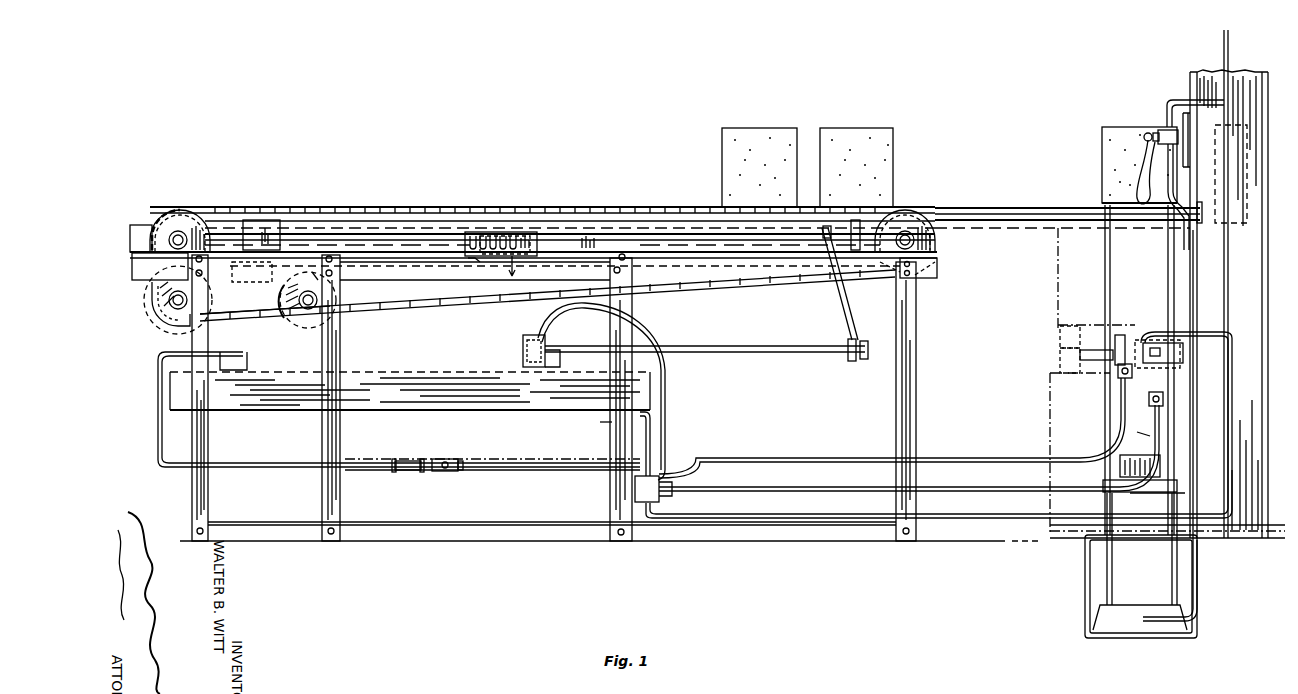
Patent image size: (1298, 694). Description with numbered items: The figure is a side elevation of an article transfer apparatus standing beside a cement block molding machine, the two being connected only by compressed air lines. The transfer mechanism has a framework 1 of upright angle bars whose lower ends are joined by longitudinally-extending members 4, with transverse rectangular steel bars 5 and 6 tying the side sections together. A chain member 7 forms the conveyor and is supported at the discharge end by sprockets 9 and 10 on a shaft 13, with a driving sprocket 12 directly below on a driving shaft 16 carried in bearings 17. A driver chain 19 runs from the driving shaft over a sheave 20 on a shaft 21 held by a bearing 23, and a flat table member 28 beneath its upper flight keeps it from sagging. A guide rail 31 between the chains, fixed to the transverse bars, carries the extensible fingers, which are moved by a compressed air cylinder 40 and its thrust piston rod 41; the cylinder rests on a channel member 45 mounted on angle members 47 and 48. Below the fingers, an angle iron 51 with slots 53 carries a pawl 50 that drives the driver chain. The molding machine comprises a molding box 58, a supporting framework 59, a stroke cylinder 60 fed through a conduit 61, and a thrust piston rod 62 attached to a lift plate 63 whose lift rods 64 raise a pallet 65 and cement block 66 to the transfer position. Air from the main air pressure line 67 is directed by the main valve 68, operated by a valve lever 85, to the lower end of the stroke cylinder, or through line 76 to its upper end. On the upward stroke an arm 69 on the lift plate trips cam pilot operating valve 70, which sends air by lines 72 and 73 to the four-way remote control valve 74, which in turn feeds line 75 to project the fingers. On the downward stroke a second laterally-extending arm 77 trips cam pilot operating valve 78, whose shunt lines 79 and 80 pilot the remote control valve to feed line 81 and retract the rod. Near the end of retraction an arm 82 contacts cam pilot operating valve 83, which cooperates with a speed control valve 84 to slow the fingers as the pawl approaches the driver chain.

The framework 1 is at (186, 490).
The longitudinally-extending members 4 is at (470, 545).
The rectangular steel bar 5 is at (866, 207).
The rectangular steel bar 6 is at (132, 240).
The chain member 7 is at (668, 288).
The sprocket 9 is at (936, 240).
The sprocket 10 is at (190, 232).
The driving sprocket 12 is at (168, 300).
The shaft 13 is at (178, 232).
The driving shaft 16 is at (170, 304).
The bearings 17 is at (165, 315).
The driver chain 19 is at (292, 322).
The sheave 20 is at (295, 298).
The shaft 21 is at (318, 299).
The bearing 23 is at (314, 290).
The table member 28 is at (242, 290).
The guide rail 31 is at (147, 220).
The compressed air cylinder 40 is at (520, 333).
The thrust piston rod 41 is at (805, 338).
The channel member 45 is at (512, 405).
The angle member 47 is at (652, 418).
The angle member 48 is at (168, 440).
The pawl 50 is at (518, 267).
The angle iron 51 is at (500, 258).
The slots 53 is at (465, 245).
The molding box 58 is at (1066, 272).
The supporting framework 59 is at (1056, 400).
The stroke cylinder 60 is at (1120, 556).
The conduit 61 is at (1198, 612).
The thrust piston rod 62 is at (1150, 436).
The lift plate 63 is at (1080, 354).
The lift rods 64 is at (1168, 255).
The pallet 65 is at (1100, 200).
The cement block 66 is at (1100, 160).
The main air pressure line 67 is at (1229, 42).
The main valve 68 is at (1162, 128).
The arm 69 is at (1155, 343).
The cam pilot operating valve 70 is at (1163, 399).
The line 72 is at (1220, 375).
The line 73 is at (980, 486).
The four-way remote control valve 74 is at (660, 478).
The line 75 is at (500, 473).
The line 76 is at (1185, 495).
The laterally-extending arm 77 is at (1119, 335).
The cam pilot operating valve 78 is at (1118, 372).
The shunt line 79 is at (1170, 330).
The shunt line 80 is at (985, 460).
The line 81 is at (668, 390).
The arm 82 is at (610, 424).
The cam pilot operating valve 83 is at (446, 459).
The speed control valve 84 is at (407, 459).
The valve lever 85 is at (1140, 150).